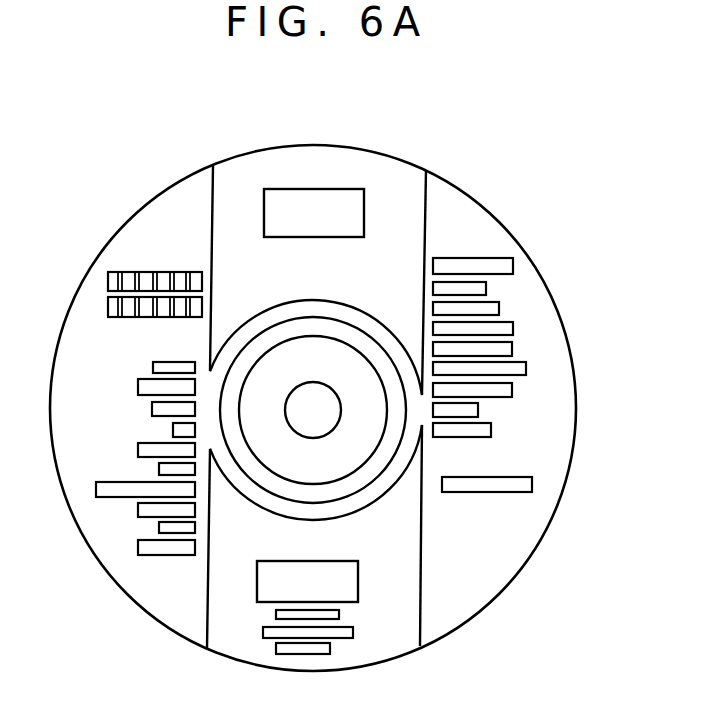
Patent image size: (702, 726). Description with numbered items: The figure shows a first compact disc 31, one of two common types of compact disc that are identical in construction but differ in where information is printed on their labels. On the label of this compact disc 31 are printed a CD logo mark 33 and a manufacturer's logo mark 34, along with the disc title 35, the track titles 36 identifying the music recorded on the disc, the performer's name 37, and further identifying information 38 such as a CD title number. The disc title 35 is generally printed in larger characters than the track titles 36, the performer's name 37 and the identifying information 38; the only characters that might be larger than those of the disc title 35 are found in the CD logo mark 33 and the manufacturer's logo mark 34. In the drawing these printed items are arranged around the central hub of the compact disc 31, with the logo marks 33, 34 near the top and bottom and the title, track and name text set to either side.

The first compact disc 31 is at (480, 205).
The CD logo mark 33 is at (350, 189).
The manufacturer's logo mark 34 is at (358, 588).
The disc title 35 is at (108, 282).
The track titles 36 is at (152, 367).
The performer's name 37 is at (521, 477).
The identifying information 38 is at (263, 632).